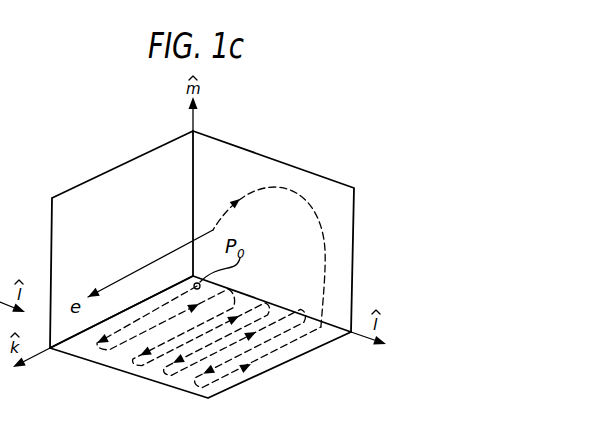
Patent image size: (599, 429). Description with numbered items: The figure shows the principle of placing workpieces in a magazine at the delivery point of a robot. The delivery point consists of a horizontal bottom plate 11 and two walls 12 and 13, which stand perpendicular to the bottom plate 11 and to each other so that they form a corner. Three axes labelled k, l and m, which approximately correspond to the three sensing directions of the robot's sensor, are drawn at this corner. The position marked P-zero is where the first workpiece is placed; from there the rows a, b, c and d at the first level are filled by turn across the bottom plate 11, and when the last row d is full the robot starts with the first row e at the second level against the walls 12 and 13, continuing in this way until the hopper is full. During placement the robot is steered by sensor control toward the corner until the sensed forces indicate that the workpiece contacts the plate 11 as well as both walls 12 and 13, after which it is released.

The bottom plate 11 is at (280, 356).
The wall 12 is at (125, 175).
The wall 13 is at (347, 254).